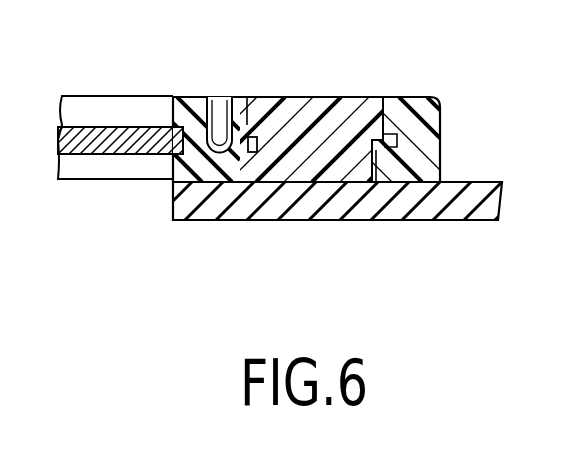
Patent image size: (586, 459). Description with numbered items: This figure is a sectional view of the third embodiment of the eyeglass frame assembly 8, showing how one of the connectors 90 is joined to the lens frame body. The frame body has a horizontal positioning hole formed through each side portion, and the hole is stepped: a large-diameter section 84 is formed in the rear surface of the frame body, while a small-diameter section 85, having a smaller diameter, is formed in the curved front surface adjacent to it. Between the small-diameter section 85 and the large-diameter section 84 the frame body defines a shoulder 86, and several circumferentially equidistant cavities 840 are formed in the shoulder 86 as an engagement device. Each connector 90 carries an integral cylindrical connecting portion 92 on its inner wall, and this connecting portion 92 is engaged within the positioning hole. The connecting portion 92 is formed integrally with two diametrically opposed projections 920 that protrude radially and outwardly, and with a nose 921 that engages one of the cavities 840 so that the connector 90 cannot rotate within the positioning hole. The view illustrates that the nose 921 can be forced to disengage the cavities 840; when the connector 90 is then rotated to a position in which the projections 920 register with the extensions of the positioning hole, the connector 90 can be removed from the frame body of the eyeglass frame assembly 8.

The eyeglass frame assembly 8 is at (115, 167).
The shoulder 86 is at (207, 112).
The projections 920 is at (387, 97).
The integral cylindrical connecting portion 92 is at (313, 185).
The large-diameter section 84 is at (395, 135).
The cavities 840 is at (393, 138).
The small-diameter section 85 is at (268, 158).
The nose 921 is at (376, 182).
The connectors 90 is at (440, 198).